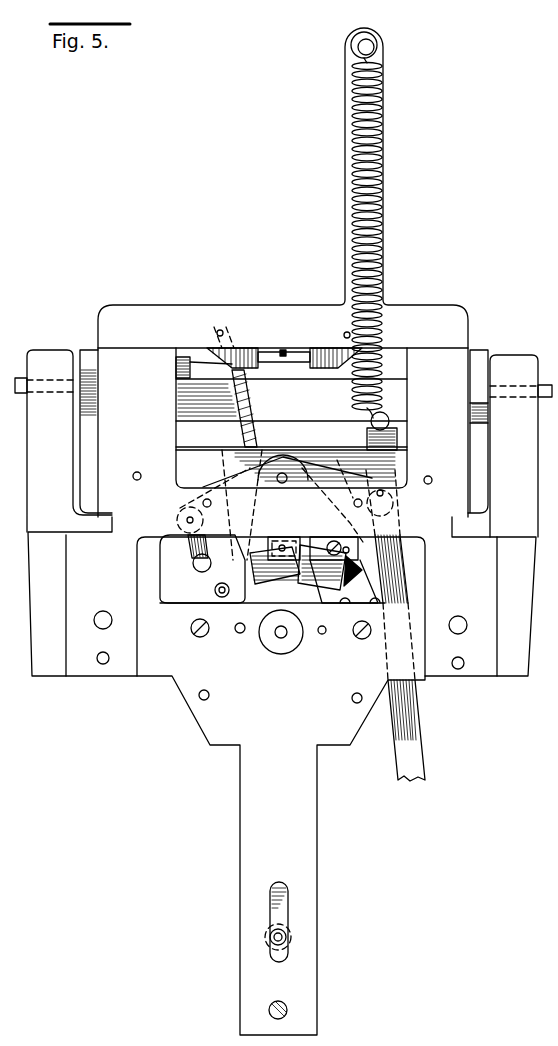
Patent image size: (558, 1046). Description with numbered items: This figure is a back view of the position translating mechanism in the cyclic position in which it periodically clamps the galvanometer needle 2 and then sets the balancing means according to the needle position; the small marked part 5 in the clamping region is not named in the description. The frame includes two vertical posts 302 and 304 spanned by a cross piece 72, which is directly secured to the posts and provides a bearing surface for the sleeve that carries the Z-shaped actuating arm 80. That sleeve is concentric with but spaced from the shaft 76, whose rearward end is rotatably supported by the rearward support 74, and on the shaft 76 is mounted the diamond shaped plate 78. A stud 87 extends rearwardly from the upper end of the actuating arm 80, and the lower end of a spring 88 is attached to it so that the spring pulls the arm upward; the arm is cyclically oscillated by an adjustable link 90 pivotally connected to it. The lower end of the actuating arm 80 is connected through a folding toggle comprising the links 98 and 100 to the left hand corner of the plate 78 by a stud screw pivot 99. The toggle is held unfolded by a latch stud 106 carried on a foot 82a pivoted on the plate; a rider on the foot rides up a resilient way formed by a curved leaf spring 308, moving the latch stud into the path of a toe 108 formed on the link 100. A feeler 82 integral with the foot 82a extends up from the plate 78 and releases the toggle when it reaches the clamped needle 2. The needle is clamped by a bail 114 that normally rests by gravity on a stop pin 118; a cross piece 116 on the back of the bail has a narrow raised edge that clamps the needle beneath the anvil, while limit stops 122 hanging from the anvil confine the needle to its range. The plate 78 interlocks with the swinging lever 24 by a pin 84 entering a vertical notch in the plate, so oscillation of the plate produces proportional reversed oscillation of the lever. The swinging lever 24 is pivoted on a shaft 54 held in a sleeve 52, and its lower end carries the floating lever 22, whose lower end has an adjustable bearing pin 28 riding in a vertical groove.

The vertical post 304 is at (127, 368).
The vertical post 302 is at (447, 368).
The spring 88 is at (388, 331).
The stud 87 is at (372, 418).
The actuating arm 80 is at (398, 440).
The stop pin 118 is at (481, 424).
The limit stops 122 is at (245, 348).
The needle 2 is at (283, 351).
The detent 5 is at (220, 334).
The cross piece 116 is at (295, 377).
The bail 114 is at (212, 405).
The feeler 82 is at (252, 432).
The cross piece 72 is at (297, 452).
The rearward support 74 is at (213, 480).
The shaft 76 is at (282, 484).
The stud screw pivot 99 is at (182, 510).
The adjustable link 90 is at (410, 736).
The toe 108 is at (172, 590).
The link 100 is at (195, 551).
The link 98 is at (211, 573).
The foot 82a is at (257, 559).
The pin 84 is at (283, 572).
The diamond shaped plate 78 is at (334, 568).
The latch stud 106 is at (218, 603).
The shaft 54 is at (272, 650).
The sleeve 52 is at (286, 650).
The swinging lever 24 is at (323, 604).
The curved leaf spring 308 is at (322, 636).
The floating lever 22 is at (276, 893).
The adjustable bearing pin 28 is at (272, 949).